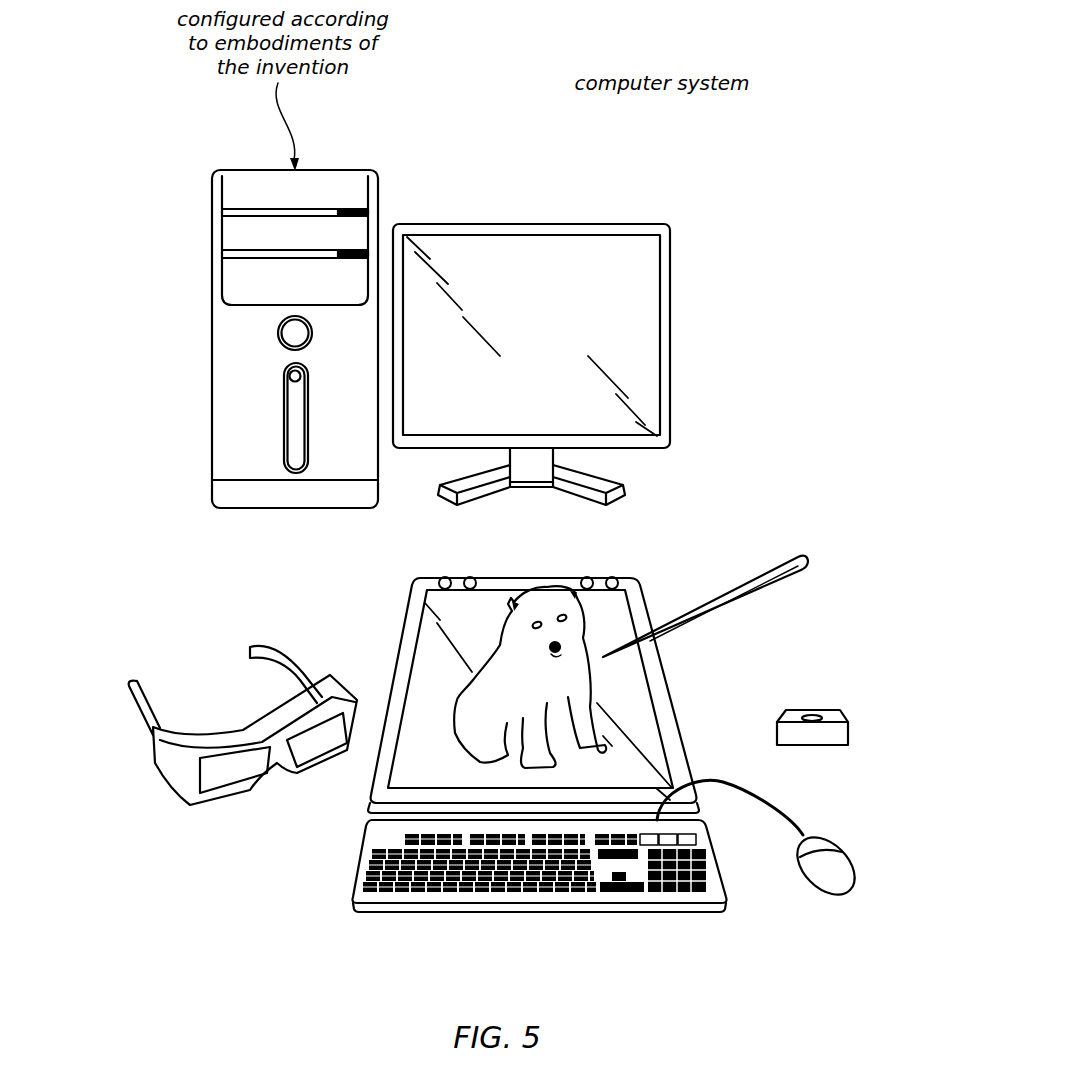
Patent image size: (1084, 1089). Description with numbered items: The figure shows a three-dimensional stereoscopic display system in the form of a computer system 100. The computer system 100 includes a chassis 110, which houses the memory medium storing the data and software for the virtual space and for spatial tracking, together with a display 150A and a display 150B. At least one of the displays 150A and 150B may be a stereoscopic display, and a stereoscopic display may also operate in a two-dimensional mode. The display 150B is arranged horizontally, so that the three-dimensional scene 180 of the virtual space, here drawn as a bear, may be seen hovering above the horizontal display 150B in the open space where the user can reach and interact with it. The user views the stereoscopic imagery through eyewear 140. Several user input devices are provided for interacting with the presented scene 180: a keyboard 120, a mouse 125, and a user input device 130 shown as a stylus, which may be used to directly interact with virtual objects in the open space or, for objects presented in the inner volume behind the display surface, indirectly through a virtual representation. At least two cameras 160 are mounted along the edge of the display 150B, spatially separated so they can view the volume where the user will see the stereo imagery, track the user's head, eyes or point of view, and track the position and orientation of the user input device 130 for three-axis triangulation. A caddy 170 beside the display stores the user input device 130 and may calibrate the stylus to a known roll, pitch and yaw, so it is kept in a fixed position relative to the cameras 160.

The computer system 100 is at (606, 132).
The chassis 110 is at (258, 168).
The keyboard 120 is at (683, 908).
The mouse 125 is at (838, 895).
The user input device 130 is at (804, 562).
The eyewear 140 is at (114, 693).
The display 150A is at (612, 223).
The display 150B is at (674, 701).
The cameras 160 is at (607, 573).
The caddy 170 is at (818, 708).
The scene 180 is at (476, 640).